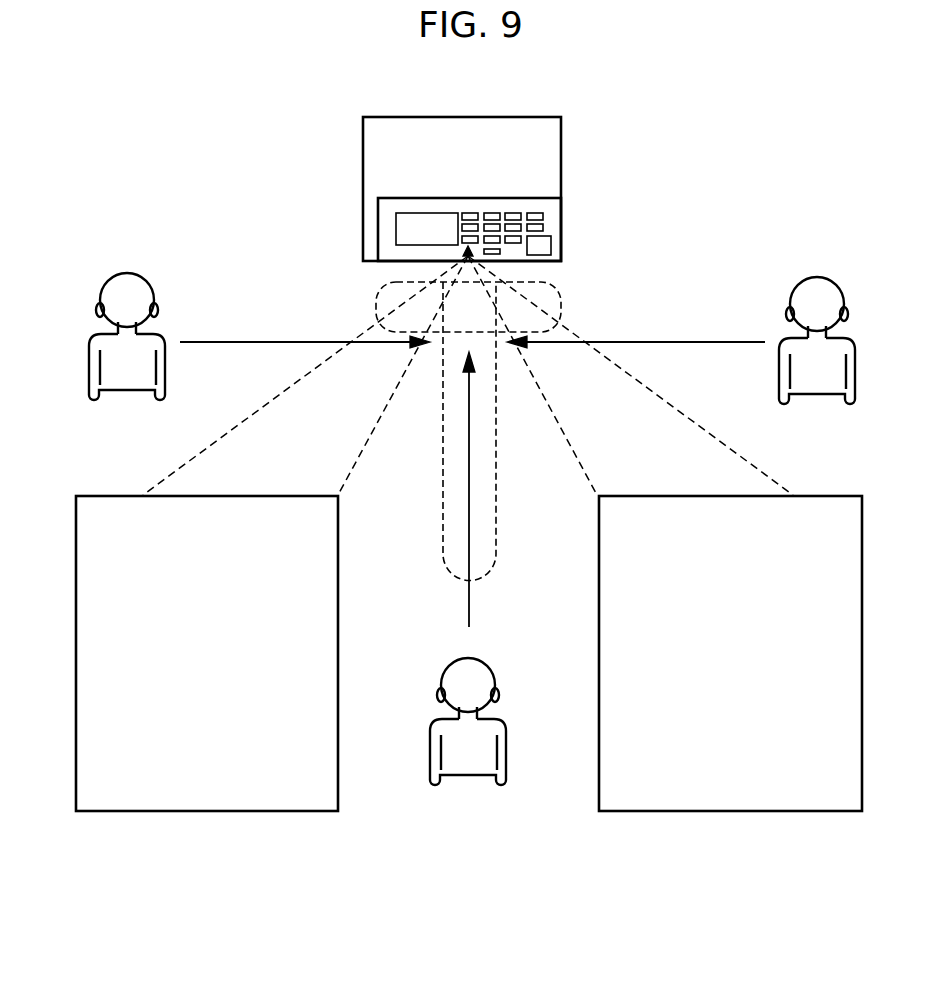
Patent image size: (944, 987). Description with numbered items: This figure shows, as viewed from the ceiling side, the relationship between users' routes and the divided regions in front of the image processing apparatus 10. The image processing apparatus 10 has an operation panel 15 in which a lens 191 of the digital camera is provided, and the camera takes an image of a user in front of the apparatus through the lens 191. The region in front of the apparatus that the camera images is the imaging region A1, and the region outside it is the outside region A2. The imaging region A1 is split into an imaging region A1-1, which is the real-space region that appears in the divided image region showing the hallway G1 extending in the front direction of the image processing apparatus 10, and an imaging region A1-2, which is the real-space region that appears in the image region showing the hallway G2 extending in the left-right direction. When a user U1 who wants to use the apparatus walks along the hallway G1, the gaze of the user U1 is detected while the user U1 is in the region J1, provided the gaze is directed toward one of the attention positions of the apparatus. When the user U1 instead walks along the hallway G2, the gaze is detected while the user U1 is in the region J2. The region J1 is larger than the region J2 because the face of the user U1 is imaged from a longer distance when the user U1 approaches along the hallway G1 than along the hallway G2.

The image processing apparatus 10 is at (363, 170).
The operation panel 15 is at (555, 232).
The lens 191 is at (468, 246).
The imaging region A1 is at (342, 411).
The imaging region A1-1 is at (418, 547).
The imaging region A1-2 is at (304, 464).
The outside region A2 is at (217, 227).
The region J1 is at (497, 515).
The region J2 is at (560, 296).
The hallway G1 is at (562, 649).
The hallway G2 is at (257, 312).
The user U1 is at (154, 302).